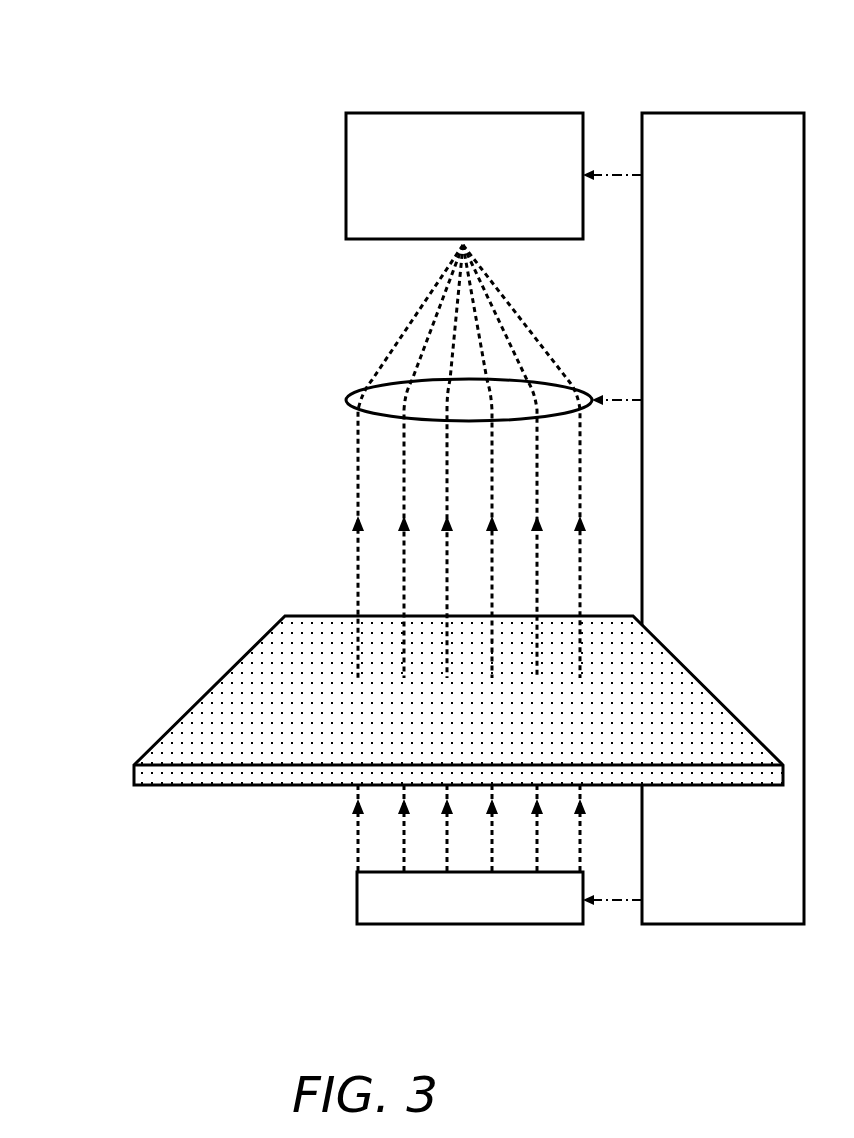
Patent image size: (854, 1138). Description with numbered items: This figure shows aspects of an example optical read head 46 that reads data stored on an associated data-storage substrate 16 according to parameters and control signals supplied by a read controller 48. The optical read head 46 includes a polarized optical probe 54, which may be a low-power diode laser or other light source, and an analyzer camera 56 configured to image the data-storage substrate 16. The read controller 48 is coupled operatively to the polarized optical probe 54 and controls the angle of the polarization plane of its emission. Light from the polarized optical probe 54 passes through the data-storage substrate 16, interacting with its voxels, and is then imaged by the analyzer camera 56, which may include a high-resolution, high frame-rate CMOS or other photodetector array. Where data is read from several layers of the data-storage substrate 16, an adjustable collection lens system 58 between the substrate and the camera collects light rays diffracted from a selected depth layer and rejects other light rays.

The optical read head 46 is at (82, 64).
The read controller 48 is at (711, 559).
The analyzer camera 56 is at (524, 187).
The polarized optical probe 54 is at (522, 909).
The adjustable collection lens system 58 is at (346, 400).
The data-storage substrate 16 is at (361, 744).